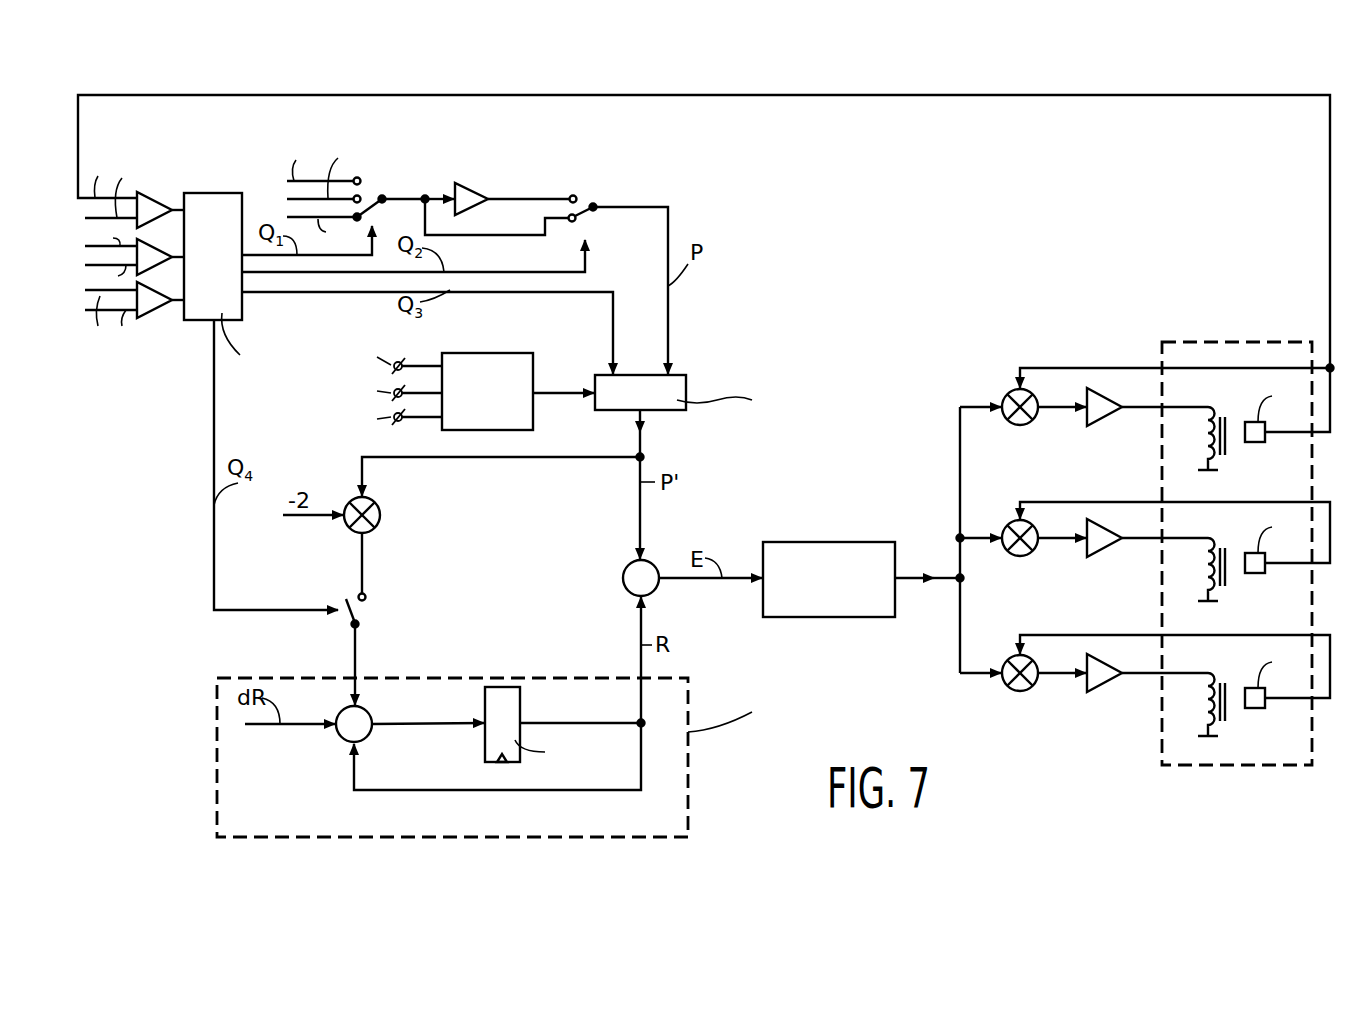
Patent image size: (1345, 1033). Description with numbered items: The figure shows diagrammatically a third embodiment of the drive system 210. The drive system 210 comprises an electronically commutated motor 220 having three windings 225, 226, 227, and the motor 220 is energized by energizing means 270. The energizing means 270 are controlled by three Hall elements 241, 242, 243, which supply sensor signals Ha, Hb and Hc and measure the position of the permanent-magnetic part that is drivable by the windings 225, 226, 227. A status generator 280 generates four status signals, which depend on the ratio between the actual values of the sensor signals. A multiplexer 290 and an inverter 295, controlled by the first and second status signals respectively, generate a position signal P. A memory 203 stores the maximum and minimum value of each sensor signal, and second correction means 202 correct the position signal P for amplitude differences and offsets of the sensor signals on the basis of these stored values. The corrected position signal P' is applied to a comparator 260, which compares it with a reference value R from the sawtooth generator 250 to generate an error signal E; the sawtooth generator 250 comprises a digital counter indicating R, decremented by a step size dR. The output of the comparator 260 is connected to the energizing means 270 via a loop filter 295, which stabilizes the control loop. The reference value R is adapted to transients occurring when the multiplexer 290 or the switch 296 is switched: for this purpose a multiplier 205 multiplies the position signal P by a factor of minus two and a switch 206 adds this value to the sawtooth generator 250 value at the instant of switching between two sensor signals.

The drive system 210 is at (120, 91).
The status generator 280 is at (209, 193).
The multiplexer 290 is at (375, 176).
The inverter / loop filter 295 is at (474, 182).
The switch 296 is at (546, 254).
The memory 203 is at (489, 353).
The second correction means 202 is at (688, 385).
The multiplier 205 is at (382, 511).
The switch 206 is at (379, 609).
The comparator 260 is at (622, 573).
The sawtooth generator 250 is at (215, 753).
The energizing means 270 is at (1002, 363).
The electronically commutated motor 220 is at (1212, 527).
The winding 225 is at (1205, 432).
The winding 226 is at (1205, 573).
The winding 227 is at (1205, 707).
The Hall element 241 is at (1253, 442).
The Hall element 242 is at (1253, 573).
The Hall element 243 is at (1253, 708).